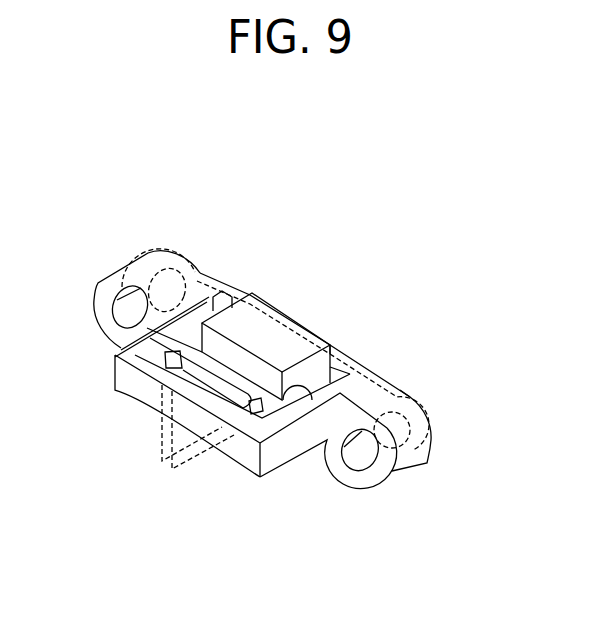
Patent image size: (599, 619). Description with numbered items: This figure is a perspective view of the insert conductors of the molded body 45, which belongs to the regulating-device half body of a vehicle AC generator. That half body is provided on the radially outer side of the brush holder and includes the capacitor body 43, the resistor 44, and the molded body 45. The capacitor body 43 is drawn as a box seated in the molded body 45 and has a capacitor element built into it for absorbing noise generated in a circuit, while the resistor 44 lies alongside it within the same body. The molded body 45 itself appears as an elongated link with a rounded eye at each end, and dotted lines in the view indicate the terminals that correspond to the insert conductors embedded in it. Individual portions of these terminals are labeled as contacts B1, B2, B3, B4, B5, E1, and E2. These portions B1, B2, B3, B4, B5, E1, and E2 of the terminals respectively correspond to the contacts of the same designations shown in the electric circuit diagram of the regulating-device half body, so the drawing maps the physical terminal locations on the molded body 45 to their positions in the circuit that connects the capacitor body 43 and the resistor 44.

The capacitor body 43 is at (280, 310).
The resistor 44 is at (220, 380).
The molded body 45 is at (417, 460).
The portion B1 of the terminals B1 is at (170, 273).
The portion B2 of the terminals B2 is at (213, 311).
The portion B3 of the terminals B3 is at (115, 355).
The portion B4 of the terminals B4 is at (316, 348).
The portion B5 of the terminals B5 is at (162, 428).
The portion E1 of the terminals E1 is at (404, 418).
The portion E2 of the terminals E2 is at (316, 348).